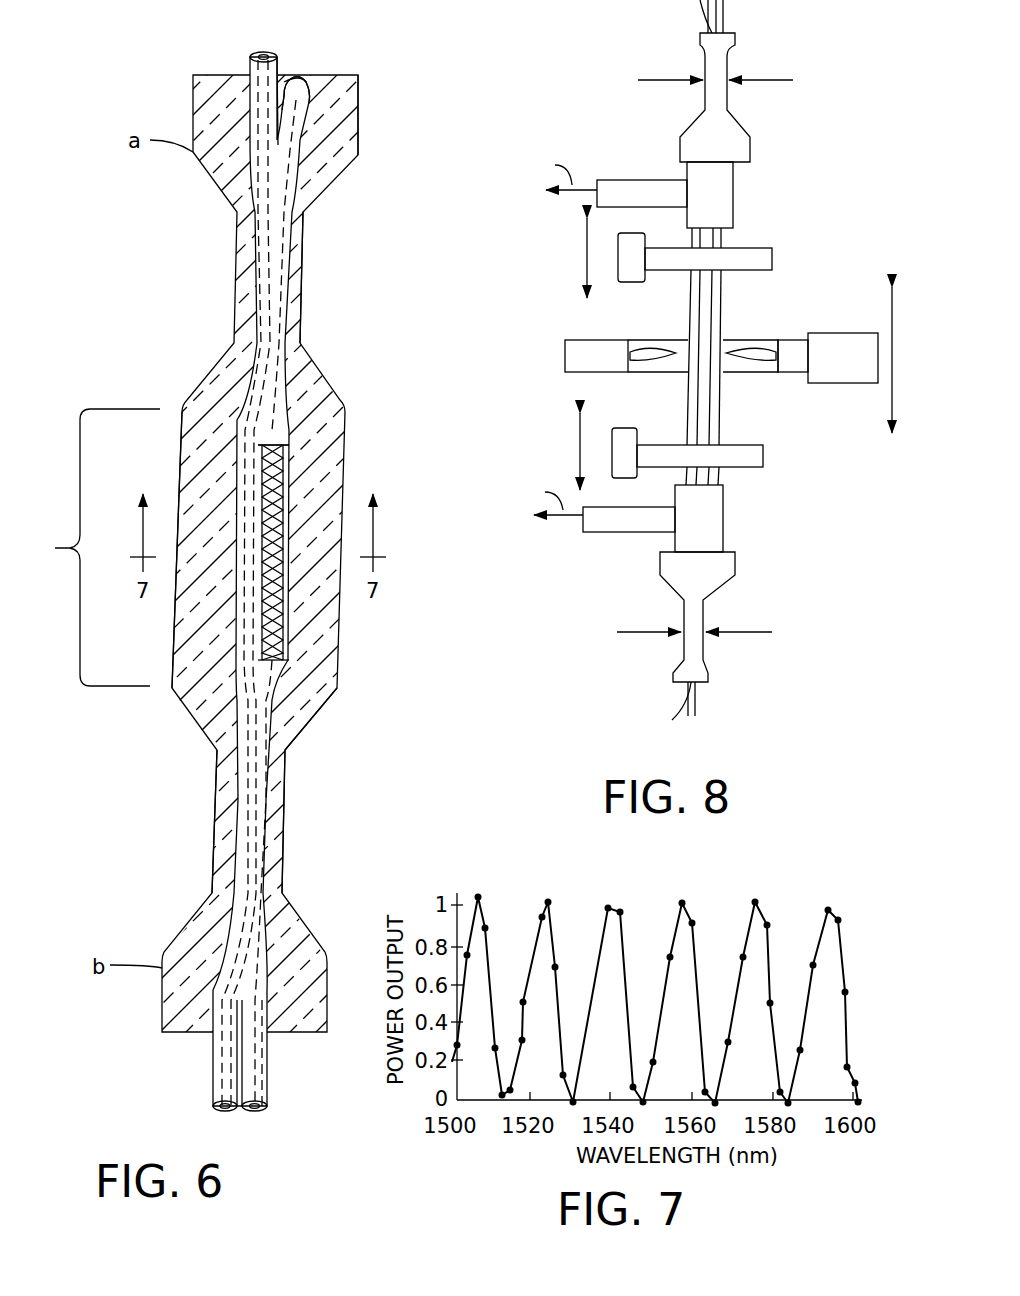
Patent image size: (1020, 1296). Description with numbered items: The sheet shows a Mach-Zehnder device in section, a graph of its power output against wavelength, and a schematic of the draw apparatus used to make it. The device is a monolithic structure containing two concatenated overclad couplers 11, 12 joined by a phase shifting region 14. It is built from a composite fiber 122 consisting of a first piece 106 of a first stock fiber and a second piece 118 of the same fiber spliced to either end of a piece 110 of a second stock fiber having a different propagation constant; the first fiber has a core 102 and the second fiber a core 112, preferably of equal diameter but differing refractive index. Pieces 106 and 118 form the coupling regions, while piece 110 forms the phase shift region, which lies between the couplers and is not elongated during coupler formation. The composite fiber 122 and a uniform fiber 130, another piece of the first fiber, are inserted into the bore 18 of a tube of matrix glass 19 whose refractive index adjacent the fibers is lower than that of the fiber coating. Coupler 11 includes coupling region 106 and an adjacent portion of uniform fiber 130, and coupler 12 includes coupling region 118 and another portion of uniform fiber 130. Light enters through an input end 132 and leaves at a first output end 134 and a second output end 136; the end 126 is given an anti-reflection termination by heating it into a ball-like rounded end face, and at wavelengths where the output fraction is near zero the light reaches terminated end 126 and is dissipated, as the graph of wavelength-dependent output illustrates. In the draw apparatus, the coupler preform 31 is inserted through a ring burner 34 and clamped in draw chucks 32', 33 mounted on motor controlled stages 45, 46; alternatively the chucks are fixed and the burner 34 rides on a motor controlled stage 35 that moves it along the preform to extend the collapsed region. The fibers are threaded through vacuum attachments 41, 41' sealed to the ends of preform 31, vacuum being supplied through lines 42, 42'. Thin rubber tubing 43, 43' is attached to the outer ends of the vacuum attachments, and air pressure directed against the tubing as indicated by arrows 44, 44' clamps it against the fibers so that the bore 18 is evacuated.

In FIG. 6, the overclad coupler 11 is at (298, 822).
In FIG. 6, the overclad coupler 12 is at (312, 262).
In FIG. 6, the phase shifting region 14 is at (90, 547).
In FIG. 6, the bore 18 is at (318, 78).
In FIG. 6, the tube of matrix glass 19 is at (352, 127).
In FIG. 6, the core 102 is at (237, 457).
In FIG. 6, the piece of first stock optical fiber 106 is at (268, 876).
In FIG. 6, the piece of second stock fiber 110 is at (300, 487).
In FIG. 6, the core 112 is at (284, 450).
In FIG. 6, the second piece of first fiber 118 is at (283, 340).
In FIG. 6, the composite fiber 122 is at (294, 694).
In FIG. 6, the terminated end 126 is at (290, 75).
In FIG. 6, the uniform fiber 130 is at (214, 656).
In FIG. 6, the input end 132 is at (253, 55).
In FIG. 6, the first output end 134 is at (228, 1078).
In FIG. 6, the second output end 136 is at (255, 1092).
In FIG. 8, the preform 31 is at (724, 410).
In FIG. 8, the draw chuck 32' is at (739, 250).
In FIG. 8, the draw chuck 33 is at (763, 455).
In FIG. 8, the ring burner 34 is at (798, 340).
In FIG. 8, the motor controlled stage 35 is at (825, 333).
In FIG. 8, the vacuum attachment 41 is at (728, 518).
In FIG. 8, the upper vacuum attachment 41' is at (747, 195).
In FIG. 8, the line 42 is at (601, 526).
In FIG. 8, the line 42' is at (612, 176).
In FIG. 8, the thin rubber tubing 43 is at (721, 616).
In FIG. 8, the tubing 43' is at (744, 97).
In FIG. 8, the arrows 44 is at (696, 655).
In FIG. 8, the arrows 44' is at (715, 57).
In FIG. 8, the motor controlled stage 45 is at (635, 282).
In FIG. 8, the motor controlled stage 46 is at (630, 428).